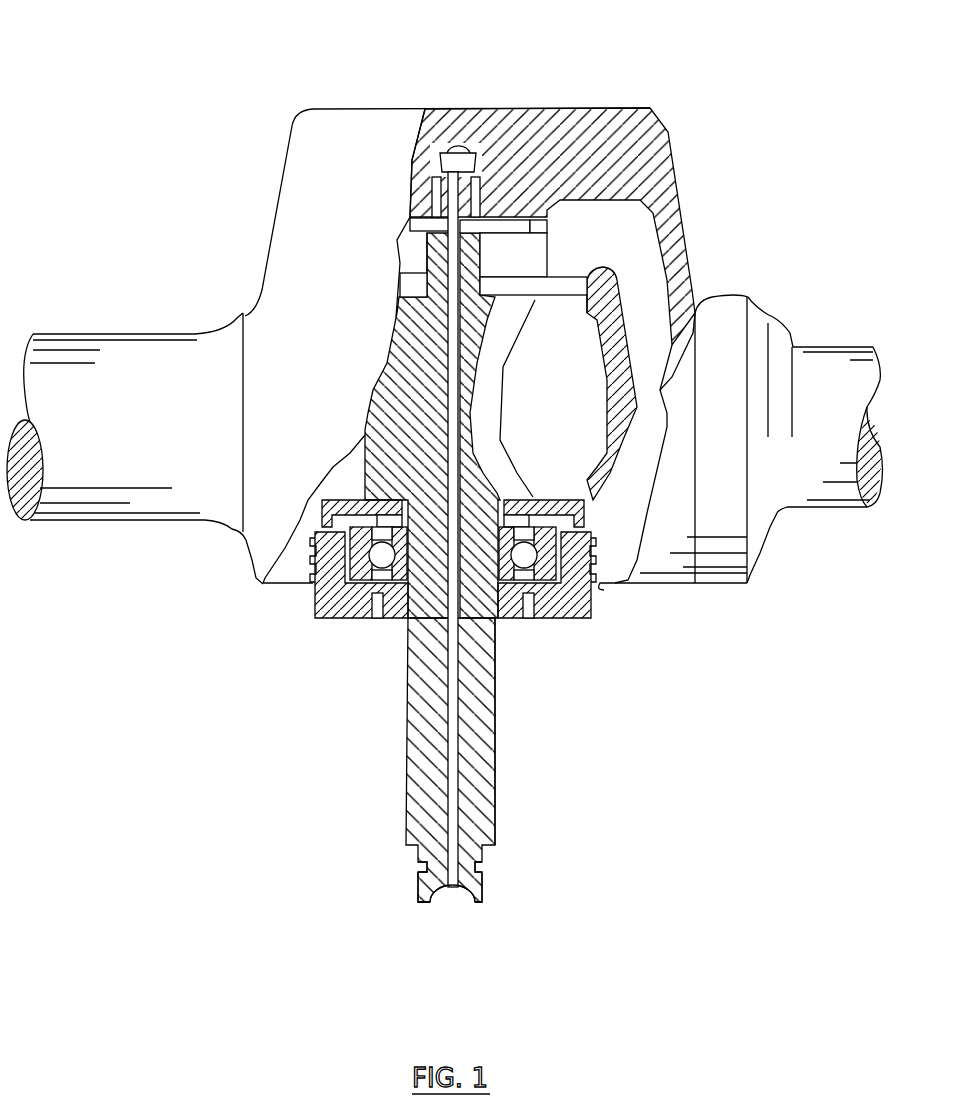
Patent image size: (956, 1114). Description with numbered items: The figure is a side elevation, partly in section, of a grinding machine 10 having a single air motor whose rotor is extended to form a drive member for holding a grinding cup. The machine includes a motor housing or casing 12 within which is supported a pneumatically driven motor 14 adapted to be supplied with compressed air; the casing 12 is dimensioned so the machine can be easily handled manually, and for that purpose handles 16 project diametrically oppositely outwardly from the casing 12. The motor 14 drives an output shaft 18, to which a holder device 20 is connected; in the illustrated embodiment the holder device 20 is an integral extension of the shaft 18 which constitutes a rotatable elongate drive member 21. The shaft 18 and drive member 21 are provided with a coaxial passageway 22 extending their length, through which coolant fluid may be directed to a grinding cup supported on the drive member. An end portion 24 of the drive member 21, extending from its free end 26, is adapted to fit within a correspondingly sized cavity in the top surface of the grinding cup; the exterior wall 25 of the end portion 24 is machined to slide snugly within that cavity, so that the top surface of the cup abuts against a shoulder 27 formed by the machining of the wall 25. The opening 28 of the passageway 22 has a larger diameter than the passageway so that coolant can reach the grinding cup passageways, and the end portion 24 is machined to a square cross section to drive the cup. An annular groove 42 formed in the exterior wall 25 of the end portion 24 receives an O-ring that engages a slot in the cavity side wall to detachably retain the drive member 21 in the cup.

The grinding machine 10 is at (232, 90).
The motor housing or casing 12 is at (680, 196).
The pneumatically driven motor 14 is at (393, 317).
The handles 16 is at (158, 365).
The output shaft 18 is at (425, 698).
The holder device 20 is at (510, 745).
The rotatable elongate drive member 21 is at (497, 818).
The coaxial passageway 22 is at (455, 690).
The end portion 24 is at (493, 892).
The exterior wall 25 is at (417, 883).
The free end 26 is at (458, 908).
The shoulder 27 is at (423, 869).
The opening 28 is at (442, 908).
The annular groove 42 is at (423, 873).